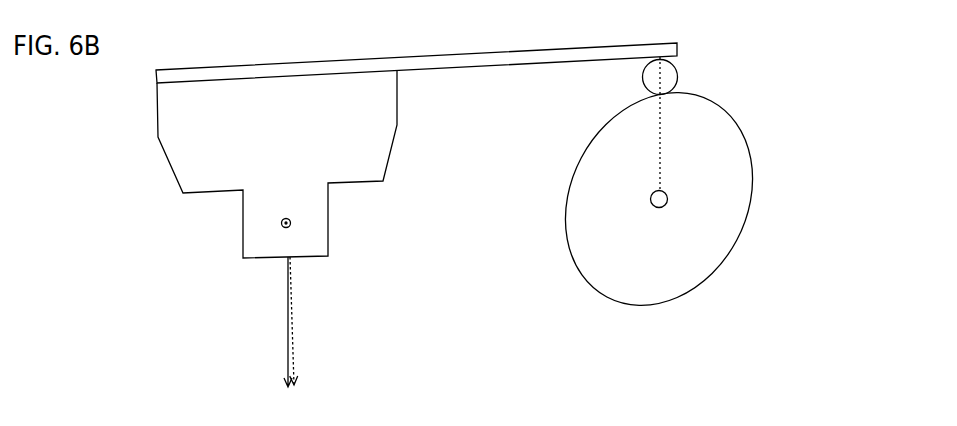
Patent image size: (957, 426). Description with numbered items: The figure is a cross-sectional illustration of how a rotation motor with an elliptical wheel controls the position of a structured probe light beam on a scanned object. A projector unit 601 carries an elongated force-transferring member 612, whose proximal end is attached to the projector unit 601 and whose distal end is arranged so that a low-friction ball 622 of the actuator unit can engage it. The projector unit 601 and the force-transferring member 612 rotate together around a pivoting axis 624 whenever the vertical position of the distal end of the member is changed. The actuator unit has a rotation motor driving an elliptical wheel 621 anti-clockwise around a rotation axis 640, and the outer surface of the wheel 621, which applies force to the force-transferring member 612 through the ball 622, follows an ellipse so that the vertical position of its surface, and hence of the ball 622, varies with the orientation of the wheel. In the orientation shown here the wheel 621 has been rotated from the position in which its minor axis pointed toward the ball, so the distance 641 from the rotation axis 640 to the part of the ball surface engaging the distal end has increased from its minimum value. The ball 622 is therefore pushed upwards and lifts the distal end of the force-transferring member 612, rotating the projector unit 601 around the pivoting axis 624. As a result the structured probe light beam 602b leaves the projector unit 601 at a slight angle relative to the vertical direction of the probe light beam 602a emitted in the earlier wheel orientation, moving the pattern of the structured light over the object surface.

The projector unit 601 is at (155, 154).
The elongated force-transferring member 612 is at (416, 51).
The elliptical wheel 621 is at (557, 239).
The low-friction ball 622 is at (697, 71).
The pivoting axis 624 is at (272, 235).
The rotation axis 640 is at (672, 212).
The distance 641 is at (651, 149).
The structured probe light beam 602a is at (255, 323).
The structured probe light beam 602b is at (331, 321).